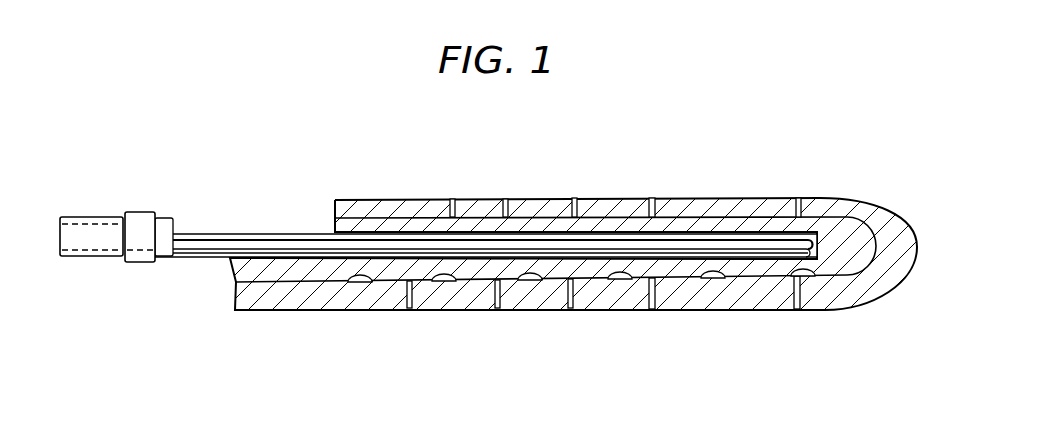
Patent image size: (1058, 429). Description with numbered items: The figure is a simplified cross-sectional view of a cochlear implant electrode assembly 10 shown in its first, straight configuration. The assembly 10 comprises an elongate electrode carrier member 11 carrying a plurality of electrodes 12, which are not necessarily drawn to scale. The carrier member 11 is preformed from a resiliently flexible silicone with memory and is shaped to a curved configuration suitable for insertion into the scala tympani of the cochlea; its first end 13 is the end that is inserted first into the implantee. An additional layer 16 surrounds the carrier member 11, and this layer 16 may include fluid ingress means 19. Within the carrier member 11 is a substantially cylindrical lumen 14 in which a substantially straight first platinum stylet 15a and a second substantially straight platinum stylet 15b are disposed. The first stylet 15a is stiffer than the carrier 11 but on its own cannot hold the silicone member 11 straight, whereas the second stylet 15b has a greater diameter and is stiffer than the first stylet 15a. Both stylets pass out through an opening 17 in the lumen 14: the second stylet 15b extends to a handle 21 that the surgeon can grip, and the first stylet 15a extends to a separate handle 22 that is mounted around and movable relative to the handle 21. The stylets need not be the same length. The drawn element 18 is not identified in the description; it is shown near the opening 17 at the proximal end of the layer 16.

The electrode assembly 10 is at (660, 145).
The elongate electrode carrier member 11 is at (298, 282).
The electrodes 12 is at (358, 281).
The first end 13 is at (866, 259).
The lumen 14 is at (553, 260).
The first platinum stylet 15a is at (213, 233).
The second platinum stylet 15b is at (203, 258).
The additional layer 16 is at (830, 198).
The opening 17 is at (332, 232).
The insulating layer 18 is at (332, 229).
The fluid ingress means 19 is at (505, 198).
The handle 21 is at (80, 227).
The separate handle 22 is at (140, 222).